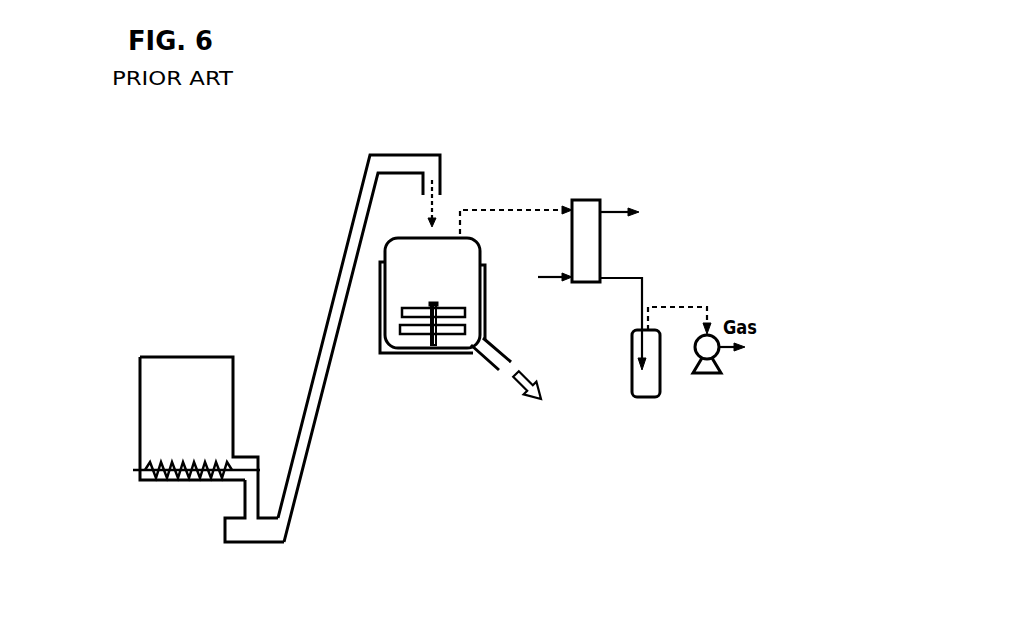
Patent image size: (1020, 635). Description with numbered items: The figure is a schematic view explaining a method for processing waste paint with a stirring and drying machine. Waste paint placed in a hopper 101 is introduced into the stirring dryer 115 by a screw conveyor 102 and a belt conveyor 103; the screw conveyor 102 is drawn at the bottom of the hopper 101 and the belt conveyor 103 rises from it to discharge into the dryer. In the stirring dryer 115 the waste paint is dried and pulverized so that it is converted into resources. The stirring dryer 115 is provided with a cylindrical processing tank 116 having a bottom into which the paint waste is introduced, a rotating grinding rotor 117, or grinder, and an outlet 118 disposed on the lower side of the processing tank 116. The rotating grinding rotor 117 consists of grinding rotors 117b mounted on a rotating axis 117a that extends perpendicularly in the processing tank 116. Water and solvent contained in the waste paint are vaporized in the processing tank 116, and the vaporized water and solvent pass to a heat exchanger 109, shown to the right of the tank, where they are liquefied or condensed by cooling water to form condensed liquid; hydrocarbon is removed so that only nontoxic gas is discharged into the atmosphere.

The hopper 101 is at (186, 370).
The screw conveyor 102 is at (172, 482).
The belt conveyor 103 is at (323, 340).
The heat exchanger 109 is at (590, 178).
The stirring dryer 115 is at (412, 364).
The processing tank 116 is at (485, 251).
The rotating grinding rotor 117 is at (401, 347).
The rotating axis 117a is at (448, 355).
The grinding rotors 117b is at (467, 312).
The outlet 118 is at (493, 370).